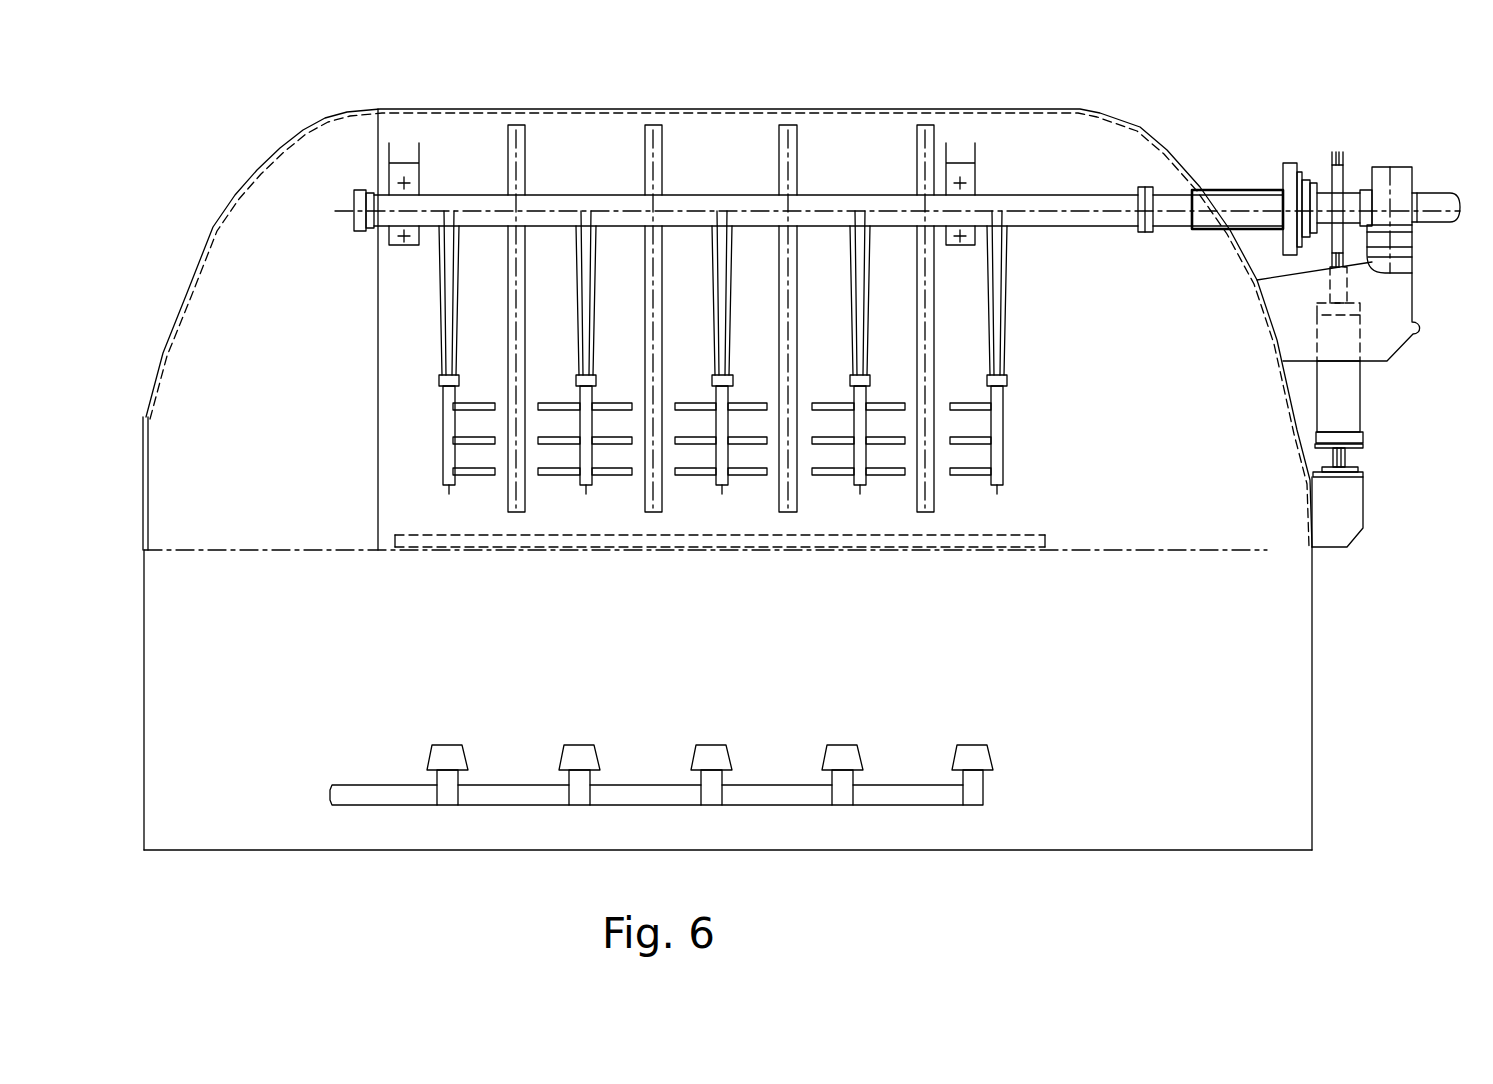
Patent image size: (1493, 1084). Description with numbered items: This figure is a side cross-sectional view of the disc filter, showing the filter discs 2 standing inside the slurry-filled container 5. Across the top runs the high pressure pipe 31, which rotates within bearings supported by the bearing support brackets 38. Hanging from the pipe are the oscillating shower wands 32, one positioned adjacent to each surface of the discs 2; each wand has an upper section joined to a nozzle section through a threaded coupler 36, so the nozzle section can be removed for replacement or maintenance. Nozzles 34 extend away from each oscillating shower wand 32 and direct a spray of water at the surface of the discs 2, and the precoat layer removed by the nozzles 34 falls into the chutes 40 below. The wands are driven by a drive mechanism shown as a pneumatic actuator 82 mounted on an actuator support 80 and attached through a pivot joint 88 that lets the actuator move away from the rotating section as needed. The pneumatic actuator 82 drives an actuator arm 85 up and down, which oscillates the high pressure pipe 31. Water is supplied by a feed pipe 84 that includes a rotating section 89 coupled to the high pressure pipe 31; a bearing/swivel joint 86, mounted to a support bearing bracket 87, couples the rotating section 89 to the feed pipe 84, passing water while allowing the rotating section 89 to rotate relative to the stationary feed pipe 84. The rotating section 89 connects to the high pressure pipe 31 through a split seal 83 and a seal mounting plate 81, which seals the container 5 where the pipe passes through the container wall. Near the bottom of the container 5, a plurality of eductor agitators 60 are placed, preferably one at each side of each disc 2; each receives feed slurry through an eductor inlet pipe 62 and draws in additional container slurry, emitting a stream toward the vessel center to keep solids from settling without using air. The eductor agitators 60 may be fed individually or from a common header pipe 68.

The container 5 is at (1052, 109).
The high pressure pipe 31 is at (1046, 195).
The bearing support brackets 38 is at (397, 167).
The discs 2 is at (787, 127).
The oscillating shower wands 32 is at (712, 252).
The coupler 36 is at (734, 380).
The nozzles 34 is at (678, 403).
The chutes 40 is at (1015, 548).
The common header pipe 68 is at (403, 800).
The eductor agitator 60 is at (447, 745).
The eductor inlet pipe 62 is at (445, 800).
The seal mounting plate 81 is at (1283, 163).
The split seal 83 is at (1301, 172).
The actuator arm 85 is at (1344, 180).
The bearing/swivel joint 86 is at (1390, 167).
The feed pipe 84 is at (1445, 193).
The rotating section 89 is at (1413, 273).
The support bearing bracket 87 is at (1421, 333).
The pneumatic actuator 82 is at (1362, 390).
The pivot joint 88 is at (1347, 457).
The actuator support 80 is at (1363, 473).